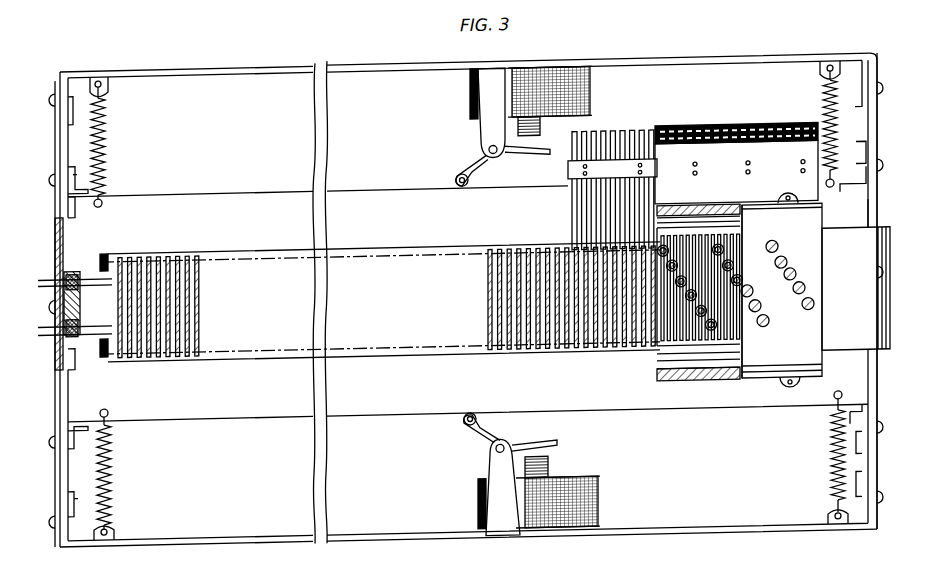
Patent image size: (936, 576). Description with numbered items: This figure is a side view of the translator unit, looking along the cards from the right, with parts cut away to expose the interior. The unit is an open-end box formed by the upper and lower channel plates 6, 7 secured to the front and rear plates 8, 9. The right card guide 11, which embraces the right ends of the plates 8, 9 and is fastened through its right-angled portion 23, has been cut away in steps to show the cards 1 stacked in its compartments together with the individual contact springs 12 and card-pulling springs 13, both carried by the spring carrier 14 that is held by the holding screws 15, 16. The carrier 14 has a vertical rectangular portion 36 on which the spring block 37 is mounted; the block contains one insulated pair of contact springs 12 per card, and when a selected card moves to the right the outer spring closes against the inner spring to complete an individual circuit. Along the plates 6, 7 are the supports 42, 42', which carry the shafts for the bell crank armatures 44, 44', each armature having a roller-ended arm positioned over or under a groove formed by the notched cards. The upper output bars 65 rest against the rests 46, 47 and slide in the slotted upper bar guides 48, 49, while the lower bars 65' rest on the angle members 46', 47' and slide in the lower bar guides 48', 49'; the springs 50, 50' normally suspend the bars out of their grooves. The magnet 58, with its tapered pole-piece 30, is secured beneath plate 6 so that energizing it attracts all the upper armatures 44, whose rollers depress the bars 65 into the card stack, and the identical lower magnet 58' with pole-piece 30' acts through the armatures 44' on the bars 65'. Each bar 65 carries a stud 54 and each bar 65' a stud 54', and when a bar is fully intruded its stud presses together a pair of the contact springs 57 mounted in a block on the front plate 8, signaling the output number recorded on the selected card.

The cards 1 is at (124, 354).
The upper channel plate 6 is at (374, 62).
The lower channel plate 7 is at (397, 541).
The front plate 8 is at (56, 140).
The rear plate 9 is at (868, 135).
The right card guide 11 is at (660, 362).
The contact springs 12 is at (580, 209).
The card-pulling springs 13 is at (706, 340).
The spring carrier 14 is at (812, 262).
The holding screw 15 is at (786, 204).
The holding screw 16 is at (782, 392).
The right-angled portion 23 is at (888, 297).
The pole-piece 30 is at (546, 129).
The pole-piece 30' is at (555, 464).
The vertical rectangular portion 36 is at (810, 200).
The spring block 37 is at (697, 130).
The support 42 is at (493, 113).
The support 42' is at (491, 487).
The bell crank armature 44 is at (490, 171).
The bell crank armature 44' is at (498, 427).
The rest 46 is at (77, 144).
The angle member 46' is at (79, 471).
The rest 47 is at (849, 174).
The angle member 47' is at (863, 450).
The upper bar guide 48 is at (84, 218).
The lower bar guide 48' is at (86, 367).
The upper bar guide 49 is at (845, 213).
The lower bar guide 49' is at (847, 377).
The spring 50 is at (465, 134).
The spring 50' is at (471, 466).
The stud 54 is at (120, 244).
The stud 54' is at (120, 371).
The paired contact springs 57 is at (91, 320).
The magnet 58 is at (508, 93).
The magnet 58' is at (558, 502).
The upper output bar 65 is at (318, 177).
The lower output bar 65' is at (468, 426).